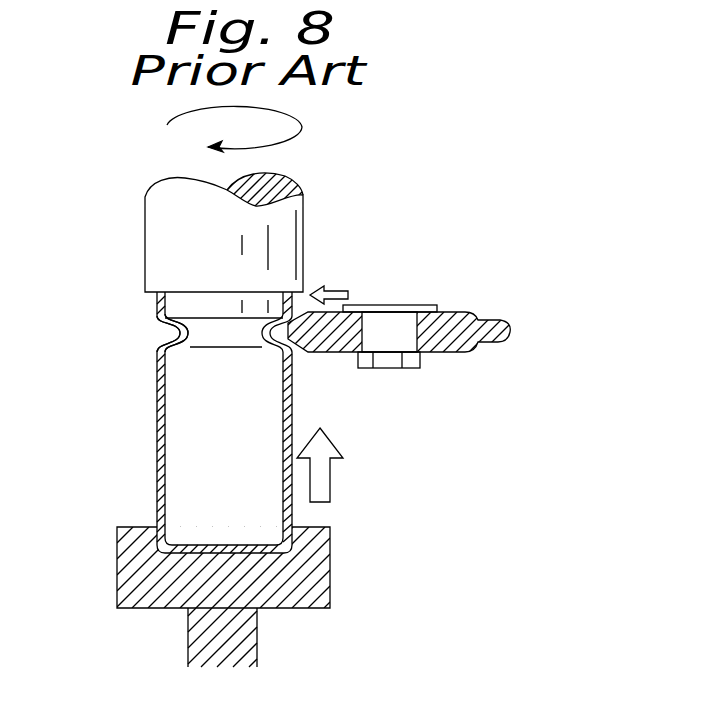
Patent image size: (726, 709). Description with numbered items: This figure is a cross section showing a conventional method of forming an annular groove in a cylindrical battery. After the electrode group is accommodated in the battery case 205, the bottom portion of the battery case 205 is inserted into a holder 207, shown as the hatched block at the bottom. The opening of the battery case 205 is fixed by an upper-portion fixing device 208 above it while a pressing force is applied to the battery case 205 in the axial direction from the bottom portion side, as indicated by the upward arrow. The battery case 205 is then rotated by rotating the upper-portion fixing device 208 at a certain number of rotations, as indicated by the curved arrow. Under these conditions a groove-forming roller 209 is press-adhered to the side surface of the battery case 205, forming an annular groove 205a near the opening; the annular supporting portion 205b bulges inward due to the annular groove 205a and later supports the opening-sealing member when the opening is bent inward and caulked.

The battery case 205 is at (157, 433).
The annular groove 205a is at (165, 330).
The annular supporting portion 205b is at (180, 330).
The holder 207 is at (300, 568).
The upper-portion fixing device 208 is at (283, 247).
The groove-forming roller 209 is at (345, 326).